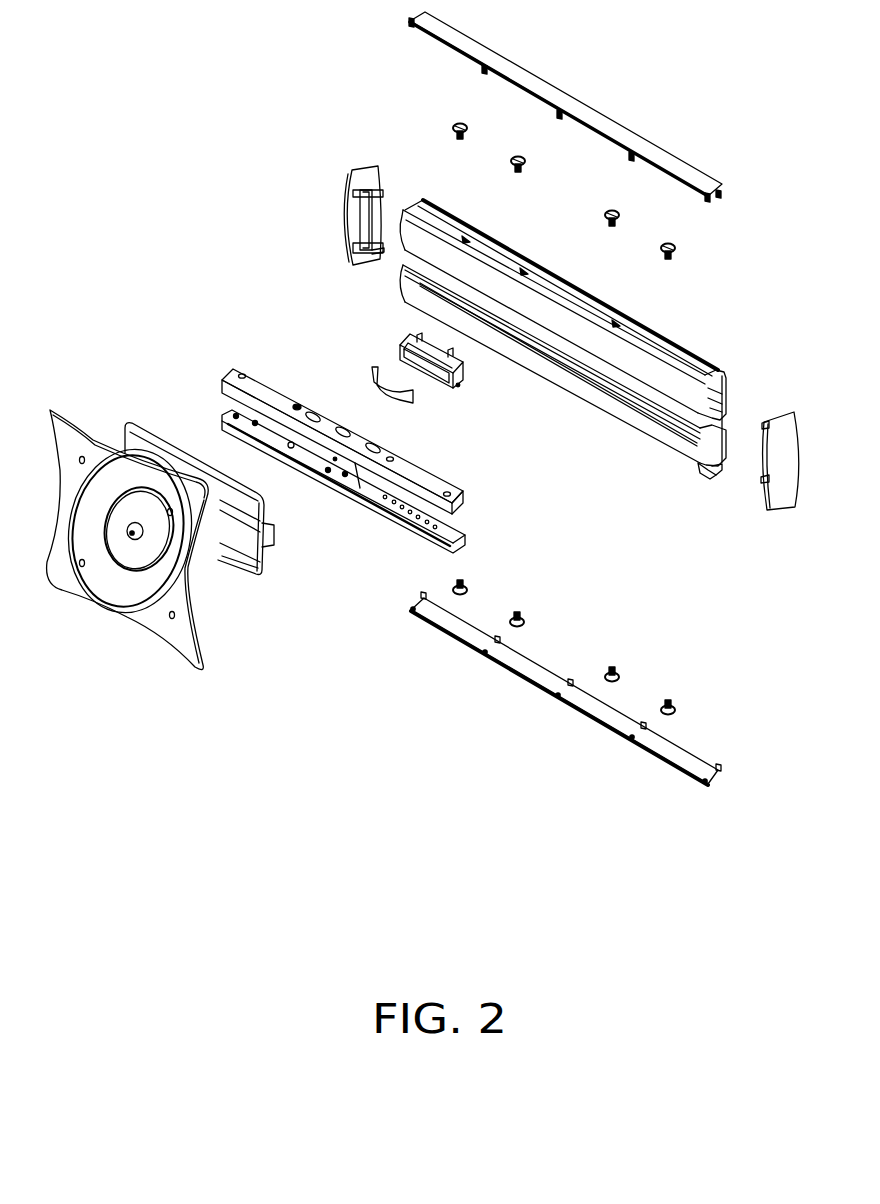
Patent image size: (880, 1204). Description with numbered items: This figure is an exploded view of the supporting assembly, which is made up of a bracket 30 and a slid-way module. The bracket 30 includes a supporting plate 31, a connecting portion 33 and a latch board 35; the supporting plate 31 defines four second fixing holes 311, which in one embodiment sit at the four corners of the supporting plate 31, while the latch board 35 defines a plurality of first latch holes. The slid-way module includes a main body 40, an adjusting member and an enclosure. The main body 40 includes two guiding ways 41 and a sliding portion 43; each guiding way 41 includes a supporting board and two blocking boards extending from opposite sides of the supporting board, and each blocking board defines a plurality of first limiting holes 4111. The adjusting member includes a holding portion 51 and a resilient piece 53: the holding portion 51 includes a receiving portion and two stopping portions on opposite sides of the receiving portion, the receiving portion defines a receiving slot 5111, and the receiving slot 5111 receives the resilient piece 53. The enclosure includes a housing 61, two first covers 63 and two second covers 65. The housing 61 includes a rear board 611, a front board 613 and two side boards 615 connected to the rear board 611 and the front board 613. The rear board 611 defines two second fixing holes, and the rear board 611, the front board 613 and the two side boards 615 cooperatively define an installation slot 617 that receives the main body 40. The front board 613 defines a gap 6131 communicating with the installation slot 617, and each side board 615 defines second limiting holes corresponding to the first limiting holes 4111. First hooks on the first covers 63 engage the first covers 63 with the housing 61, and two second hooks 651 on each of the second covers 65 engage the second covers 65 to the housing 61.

The bracket 30 is at (330, 603).
The supporting plate 31 is at (197, 647).
The second fixing holes 311 is at (170, 617).
The connecting portion 33 is at (205, 563).
The latch board 35 is at (253, 570).
The main body 40 is at (157, 331).
The guiding ways 41 is at (236, 365).
The first limiting holes 4111 is at (297, 403).
The sliding portion 43 is at (232, 405).
The holding portion 51 is at (462, 398).
The receiving slot 5111 is at (400, 348).
The resilient piece 53 is at (400, 395).
The housing 61 is at (799, 310).
The rear board 611 is at (727, 395).
The front board 613 is at (708, 362).
The gap 6131 is at (656, 430).
The side boards 615 is at (716, 370).
The installation slot 617 is at (718, 466).
The first covers 63 is at (783, 497).
The second covers 65 is at (682, 757).
The second hooks 651 is at (620, 730).